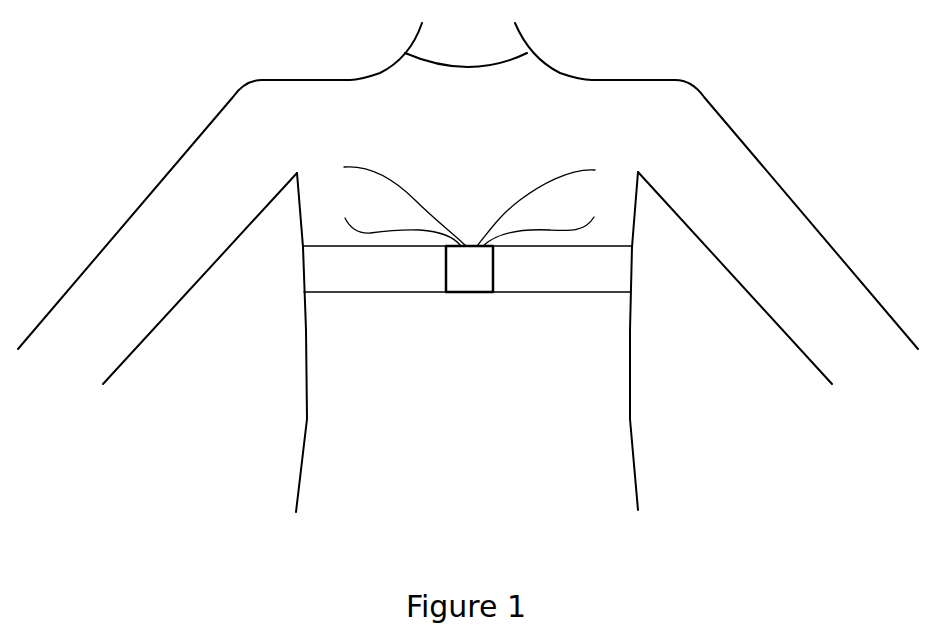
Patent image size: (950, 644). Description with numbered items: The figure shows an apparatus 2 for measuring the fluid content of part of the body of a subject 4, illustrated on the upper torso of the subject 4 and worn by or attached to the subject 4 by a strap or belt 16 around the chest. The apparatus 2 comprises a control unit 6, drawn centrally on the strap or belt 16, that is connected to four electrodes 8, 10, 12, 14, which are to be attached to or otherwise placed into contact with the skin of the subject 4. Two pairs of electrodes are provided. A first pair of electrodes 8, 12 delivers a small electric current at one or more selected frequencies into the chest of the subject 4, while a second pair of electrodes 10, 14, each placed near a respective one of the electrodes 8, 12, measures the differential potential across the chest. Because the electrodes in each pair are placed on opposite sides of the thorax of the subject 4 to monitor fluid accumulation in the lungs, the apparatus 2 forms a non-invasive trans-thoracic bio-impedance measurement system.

The apparatus 2 is at (668, 300).
The subject 4 is at (242, 117).
The control unit 6 is at (477, 278).
The electrode 8 is at (386, 223).
The electrode 10 is at (388, 200).
The electrode 12 is at (552, 201).
The electrode 14 is at (555, 223).
The strap or belt 16 is at (313, 267).